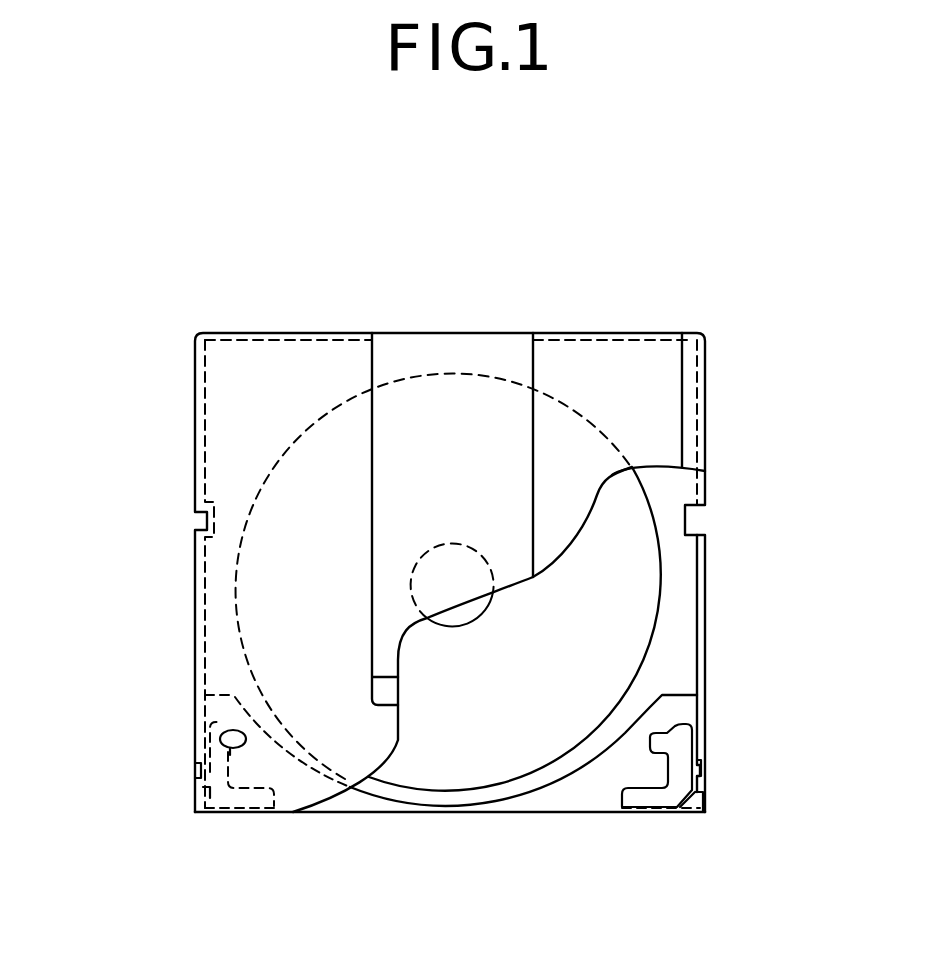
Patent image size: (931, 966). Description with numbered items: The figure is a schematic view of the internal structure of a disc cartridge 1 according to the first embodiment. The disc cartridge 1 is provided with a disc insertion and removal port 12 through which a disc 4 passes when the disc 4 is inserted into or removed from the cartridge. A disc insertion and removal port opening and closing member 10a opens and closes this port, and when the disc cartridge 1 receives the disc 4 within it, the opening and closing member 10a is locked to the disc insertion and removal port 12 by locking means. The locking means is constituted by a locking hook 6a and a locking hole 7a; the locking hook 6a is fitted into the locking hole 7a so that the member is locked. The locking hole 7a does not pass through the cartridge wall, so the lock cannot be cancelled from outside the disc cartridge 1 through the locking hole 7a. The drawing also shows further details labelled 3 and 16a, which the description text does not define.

The disc cartridge 1 is at (250, 423).
The disk 3 is at (465, 376).
The disc 4 is at (650, 612).
The locking hook 6a is at (197, 782).
The locking hole 7a is at (197, 768).
The disc insertion and removal port opening and closing member 10a is at (452, 812).
The disc insertion and removal port 12 is at (547, 812).
The rib 16a is at (243, 812).